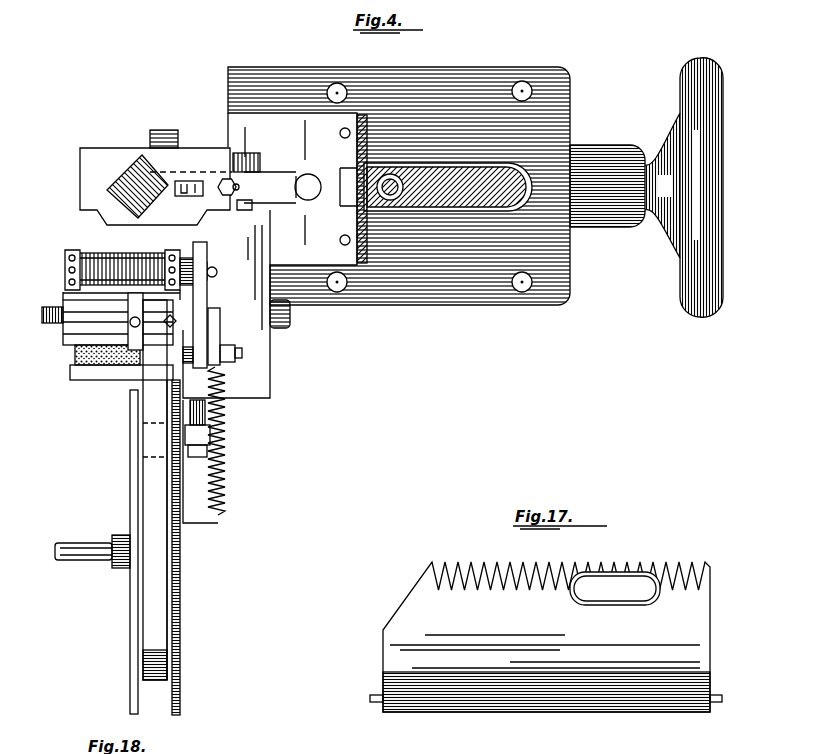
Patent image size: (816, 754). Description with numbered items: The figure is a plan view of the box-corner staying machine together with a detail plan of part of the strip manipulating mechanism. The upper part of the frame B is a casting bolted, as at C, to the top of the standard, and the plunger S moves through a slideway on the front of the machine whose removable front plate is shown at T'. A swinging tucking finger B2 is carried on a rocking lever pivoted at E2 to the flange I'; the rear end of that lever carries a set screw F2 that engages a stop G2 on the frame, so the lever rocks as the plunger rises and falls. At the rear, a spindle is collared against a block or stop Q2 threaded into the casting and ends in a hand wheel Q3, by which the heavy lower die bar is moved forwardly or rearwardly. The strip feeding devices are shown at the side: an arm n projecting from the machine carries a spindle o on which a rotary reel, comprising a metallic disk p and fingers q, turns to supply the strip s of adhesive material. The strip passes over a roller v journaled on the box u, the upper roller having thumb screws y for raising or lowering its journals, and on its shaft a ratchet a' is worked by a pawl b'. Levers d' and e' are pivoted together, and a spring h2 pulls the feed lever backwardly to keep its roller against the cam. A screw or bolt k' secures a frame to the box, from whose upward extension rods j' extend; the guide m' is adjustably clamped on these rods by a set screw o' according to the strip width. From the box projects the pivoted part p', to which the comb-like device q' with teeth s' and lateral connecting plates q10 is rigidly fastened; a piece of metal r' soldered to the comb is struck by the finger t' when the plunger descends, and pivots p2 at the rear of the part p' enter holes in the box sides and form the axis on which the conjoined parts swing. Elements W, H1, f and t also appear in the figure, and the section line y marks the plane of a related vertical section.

In FIG. 4, the upper part of the frame B is at (486, 180).
In FIG. 4, the tucking finger B2 is at (183, 181).
In FIG. 4, the bolts C is at (429, 185).
In FIG. 4, the shaft W is at (392, 174).
In FIG. 4, the set screw F2 is at (310, 202).
In FIG. 4, the stop G2 is at (294, 187).
In FIG. 4, the plate H1 is at (166, 177).
In FIG. 4, the plunger S is at (138, 189).
In FIG. 4, the front plate T' is at (191, 161).
In FIG. 4, the flange I' is at (261, 160).
In FIG. 4, the pivot E2 is at (236, 303).
In FIG. 4, the block or stop Q2 is at (625, 185).
In FIG. 4, the hand wheel Q3 is at (722, 118).
In FIG. 4, the thumb screws y is at (230, 187).
In FIG. 4, the roller v is at (121, 259).
In FIG. 4, the comb-like device q' is at (96, 260).
In FIG. 17, the comb-like device q' is at (546, 637).
In FIG. 4, the box u is at (150, 256).
In FIG. 4, the ratchet a' is at (205, 257).
In FIG. 4, the pawl b' is at (219, 264).
In FIG. 4, the lever d' is at (228, 278).
In FIG. 4, the screw or bolt k' is at (206, 309).
In FIG. 4, the rods j' is at (100, 334).
In FIG. 4, the guide m' is at (119, 321).
In FIG. 4, the set screw o' is at (118, 356).
In FIG. 4, the finger t' is at (200, 305).
In FIG. 4, the lever e' is at (229, 336).
In FIG. 4, the nut f is at (232, 352).
In FIG. 4, the spring h2 is at (222, 470).
In FIG. 4, the arm n is at (184, 510).
In FIG. 4, the strip of adhesive material s is at (155, 490).
In FIG. 4, the fingers q is at (137, 530).
In FIG. 4, the plate t is at (121, 552).
In FIG. 4, the metallic disk p is at (187, 547).
In FIG. 4, the spindle o is at (83, 540).
In FIG. 4, the piece of metal r' is at (115, 560).
In FIG. 17, the piece of metal r' is at (615, 588).
In FIG. 17, the teeth s' is at (556, 548).
In FIG. 17, the projecting pivoted part of the box p' is at (546, 703).
In FIG. 17, the lips or lateral connecting plates q10 is at (722, 620).
In FIG. 17, the pivots p2 is at (738, 690).